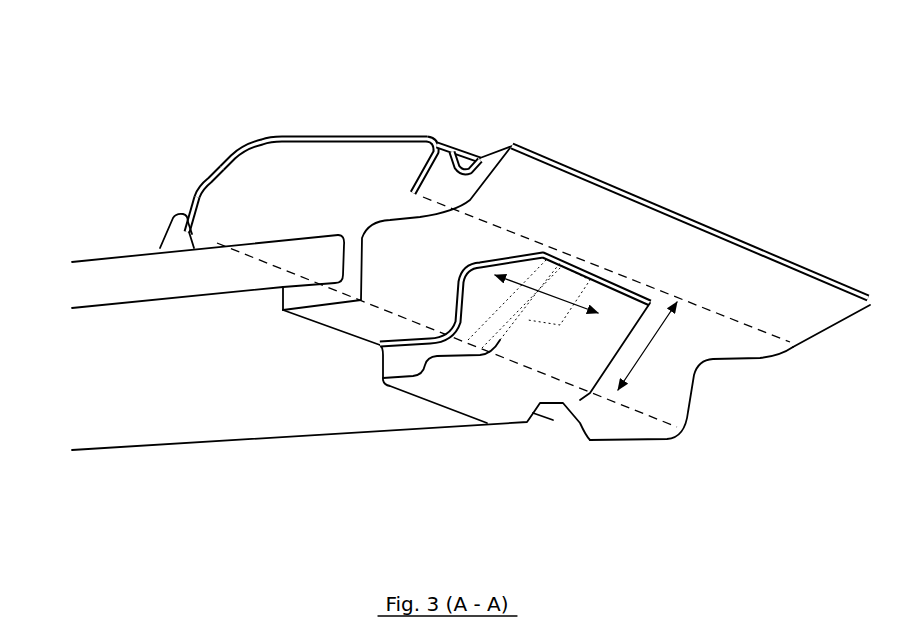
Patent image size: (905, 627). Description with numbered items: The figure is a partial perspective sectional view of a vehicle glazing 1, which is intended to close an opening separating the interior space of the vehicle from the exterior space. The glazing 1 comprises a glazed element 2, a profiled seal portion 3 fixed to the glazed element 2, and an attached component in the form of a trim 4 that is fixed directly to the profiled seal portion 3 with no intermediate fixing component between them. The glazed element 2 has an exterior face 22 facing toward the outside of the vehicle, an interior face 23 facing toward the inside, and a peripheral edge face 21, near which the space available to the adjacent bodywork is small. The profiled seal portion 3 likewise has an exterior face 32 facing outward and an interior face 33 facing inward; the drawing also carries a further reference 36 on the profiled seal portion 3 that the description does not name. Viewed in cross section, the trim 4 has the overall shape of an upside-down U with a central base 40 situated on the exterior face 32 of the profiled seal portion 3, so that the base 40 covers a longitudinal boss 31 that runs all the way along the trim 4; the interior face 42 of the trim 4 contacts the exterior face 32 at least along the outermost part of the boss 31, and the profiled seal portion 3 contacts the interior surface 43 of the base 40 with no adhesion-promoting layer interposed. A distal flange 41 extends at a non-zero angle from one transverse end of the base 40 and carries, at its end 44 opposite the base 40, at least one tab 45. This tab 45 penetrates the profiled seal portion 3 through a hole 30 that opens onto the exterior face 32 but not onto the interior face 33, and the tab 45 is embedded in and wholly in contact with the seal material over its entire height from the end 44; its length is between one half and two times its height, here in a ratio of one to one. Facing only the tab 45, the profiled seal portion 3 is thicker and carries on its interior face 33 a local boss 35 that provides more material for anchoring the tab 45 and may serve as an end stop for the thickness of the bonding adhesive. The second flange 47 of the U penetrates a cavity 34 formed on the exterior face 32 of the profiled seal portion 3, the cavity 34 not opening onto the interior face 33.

The glazing 1 is at (112, 72).
The glazed element 2 is at (80, 293).
The profiled seal portion 3 is at (291, 201).
The trim 4 is at (293, 113).
The peripheral edge face 21 is at (337, 247).
The exterior face 22 is at (72, 262).
The interior face 23 is at (103, 307).
The hole 30 is at (575, 255).
The longitudinal boss 31 is at (365, 163).
The exterior face 32 is at (457, 158).
The interior face 33 is at (617, 423).
The cavity 34 is at (198, 250).
The local boss 35 is at (510, 370).
The rear wall 36 is at (510, 147).
The base 40 is at (295, 137).
The flange 41 is at (423, 170).
The interior face 42 is at (218, 166).
The interior surface 43 is at (227, 153).
The end 44 is at (752, 330).
The tab 45 is at (530, 330).
The second flange 47 is at (193, 203).